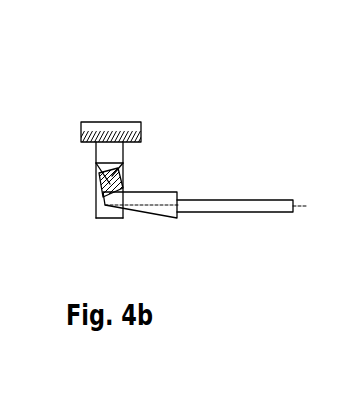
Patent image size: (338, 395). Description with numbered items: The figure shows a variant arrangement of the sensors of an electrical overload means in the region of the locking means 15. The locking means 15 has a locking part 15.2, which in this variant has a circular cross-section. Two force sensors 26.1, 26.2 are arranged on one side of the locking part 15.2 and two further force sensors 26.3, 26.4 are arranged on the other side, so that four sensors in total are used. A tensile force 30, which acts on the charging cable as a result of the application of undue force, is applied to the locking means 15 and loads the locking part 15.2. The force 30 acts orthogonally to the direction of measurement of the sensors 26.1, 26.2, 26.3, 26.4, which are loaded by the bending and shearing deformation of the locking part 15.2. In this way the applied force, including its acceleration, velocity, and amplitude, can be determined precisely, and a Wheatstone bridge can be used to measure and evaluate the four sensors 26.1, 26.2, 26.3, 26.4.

The locking means 15 is at (106, 122).
The locking part 15.2 is at (103, 216).
The sensor 26.1 is at (99, 192).
The second sensor 26.2 is at (96, 163).
The sensor 26.3 is at (123, 163).
The sensor 26.4 is at (105, 205).
The tensile force 30 is at (242, 220).